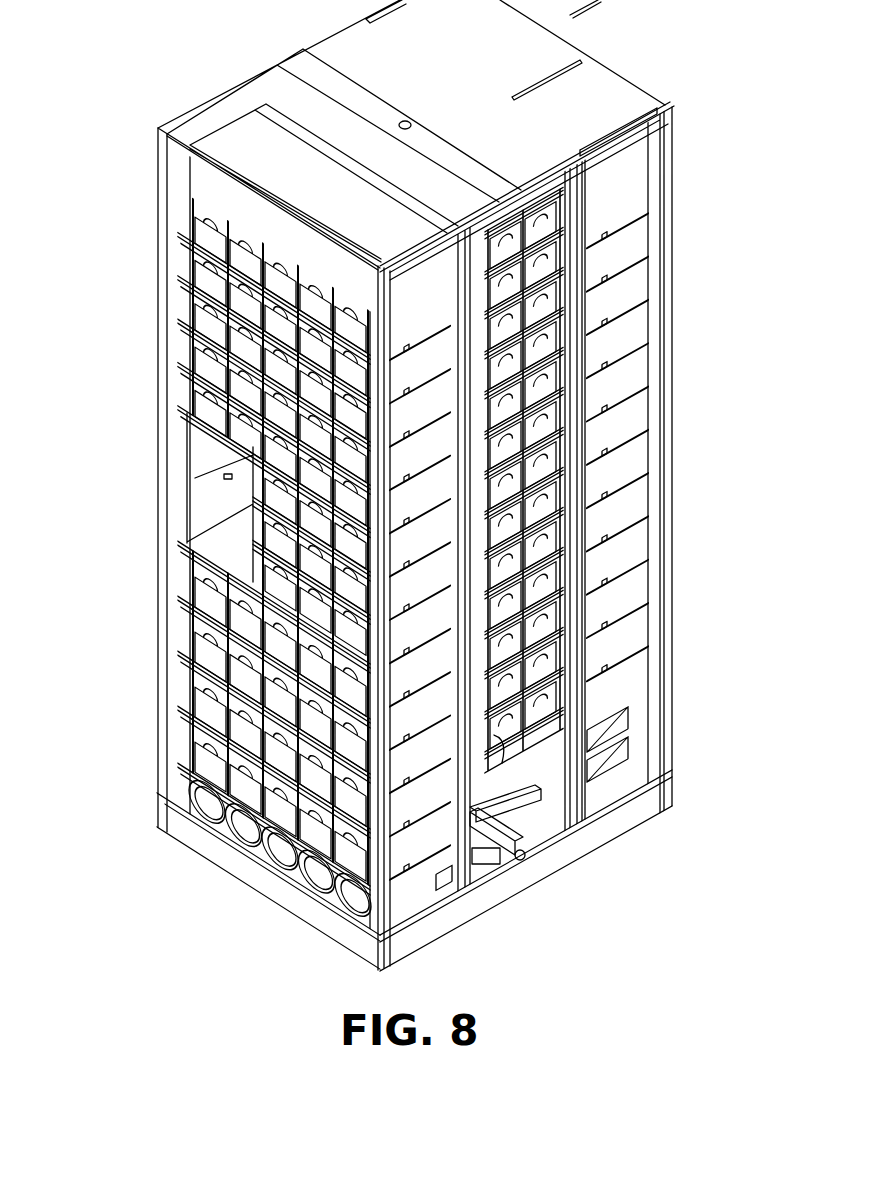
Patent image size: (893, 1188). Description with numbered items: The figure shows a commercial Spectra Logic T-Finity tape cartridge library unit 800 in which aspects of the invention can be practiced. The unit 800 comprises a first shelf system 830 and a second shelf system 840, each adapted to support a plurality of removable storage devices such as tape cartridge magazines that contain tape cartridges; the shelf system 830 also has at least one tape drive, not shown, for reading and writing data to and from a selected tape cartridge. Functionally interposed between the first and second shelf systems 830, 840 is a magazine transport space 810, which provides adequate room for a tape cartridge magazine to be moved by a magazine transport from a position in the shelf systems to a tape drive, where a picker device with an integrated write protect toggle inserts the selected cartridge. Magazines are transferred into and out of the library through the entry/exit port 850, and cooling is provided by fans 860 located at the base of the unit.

The T-Finity tape library unit 800 is at (410, 485).
The magazine transport space 810 is at (541, 820).
The first shelf system 830 is at (128, 614).
The second shelf system 840 is at (694, 490).
The entry/exit port 850 is at (213, 507).
The fans 860 is at (203, 856).